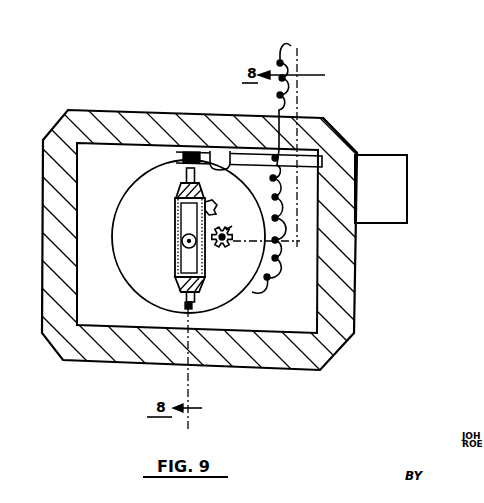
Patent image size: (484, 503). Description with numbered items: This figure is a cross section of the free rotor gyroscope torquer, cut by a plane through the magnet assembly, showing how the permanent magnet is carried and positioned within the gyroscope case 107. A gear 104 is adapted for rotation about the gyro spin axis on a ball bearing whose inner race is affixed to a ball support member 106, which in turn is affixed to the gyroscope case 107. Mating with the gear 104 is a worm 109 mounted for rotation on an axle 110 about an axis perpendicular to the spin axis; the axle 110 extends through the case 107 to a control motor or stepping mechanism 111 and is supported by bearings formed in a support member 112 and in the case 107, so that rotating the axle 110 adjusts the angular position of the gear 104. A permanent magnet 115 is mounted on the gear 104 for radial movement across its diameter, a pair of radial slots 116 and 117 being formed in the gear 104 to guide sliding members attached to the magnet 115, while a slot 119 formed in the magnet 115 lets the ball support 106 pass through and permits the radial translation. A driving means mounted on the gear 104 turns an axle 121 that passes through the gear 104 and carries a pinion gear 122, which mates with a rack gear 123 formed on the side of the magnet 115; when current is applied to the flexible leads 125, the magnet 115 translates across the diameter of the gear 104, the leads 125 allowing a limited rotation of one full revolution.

The gear 104 is at (131, 251).
The ball support member 106 is at (177, 250).
The gyroscope case 107 is at (123, 118).
The worm 109 is at (183, 157).
The axle 110 is at (338, 133).
The stepping mechanism 111 is at (398, 188).
The support member 112 is at (230, 168).
The permanent magnet 115 is at (176, 238).
The radial slot 116 is at (186, 176).
The radial slot 117 is at (184, 306).
The slot 119 is at (182, 240).
The axle 121 is at (223, 248).
The pinion gear 122 is at (226, 230).
The rack gear 123 is at (214, 204).
The leads 125 is at (282, 52).